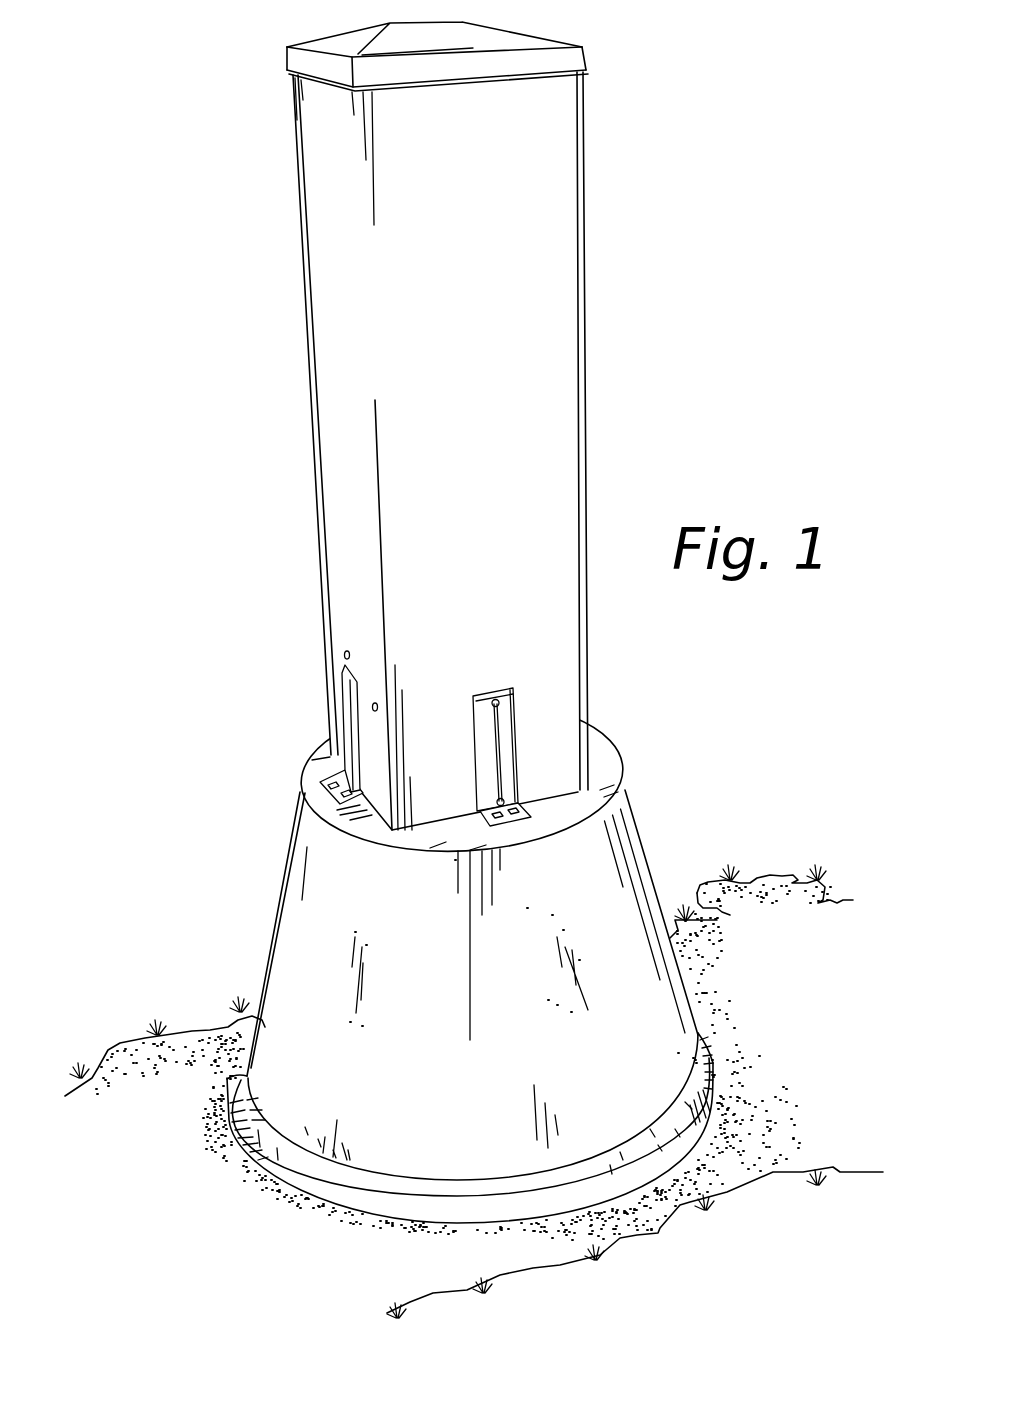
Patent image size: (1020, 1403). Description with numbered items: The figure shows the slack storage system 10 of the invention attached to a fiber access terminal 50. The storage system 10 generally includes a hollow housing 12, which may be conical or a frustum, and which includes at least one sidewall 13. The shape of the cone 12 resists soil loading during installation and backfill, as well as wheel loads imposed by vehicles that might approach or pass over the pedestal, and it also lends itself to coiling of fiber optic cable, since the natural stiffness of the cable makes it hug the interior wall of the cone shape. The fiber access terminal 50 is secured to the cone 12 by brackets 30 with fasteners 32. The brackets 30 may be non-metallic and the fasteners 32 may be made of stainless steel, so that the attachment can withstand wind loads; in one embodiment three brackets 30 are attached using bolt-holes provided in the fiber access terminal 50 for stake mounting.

The storage system 10 is at (238, 753).
The hollow housing 12 is at (630, 836).
The sidewall 13 is at (290, 931).
The brackets 30 is at (365, 735).
The fasteners 32 is at (352, 675).
The fiber access terminal 50 is at (568, 380).